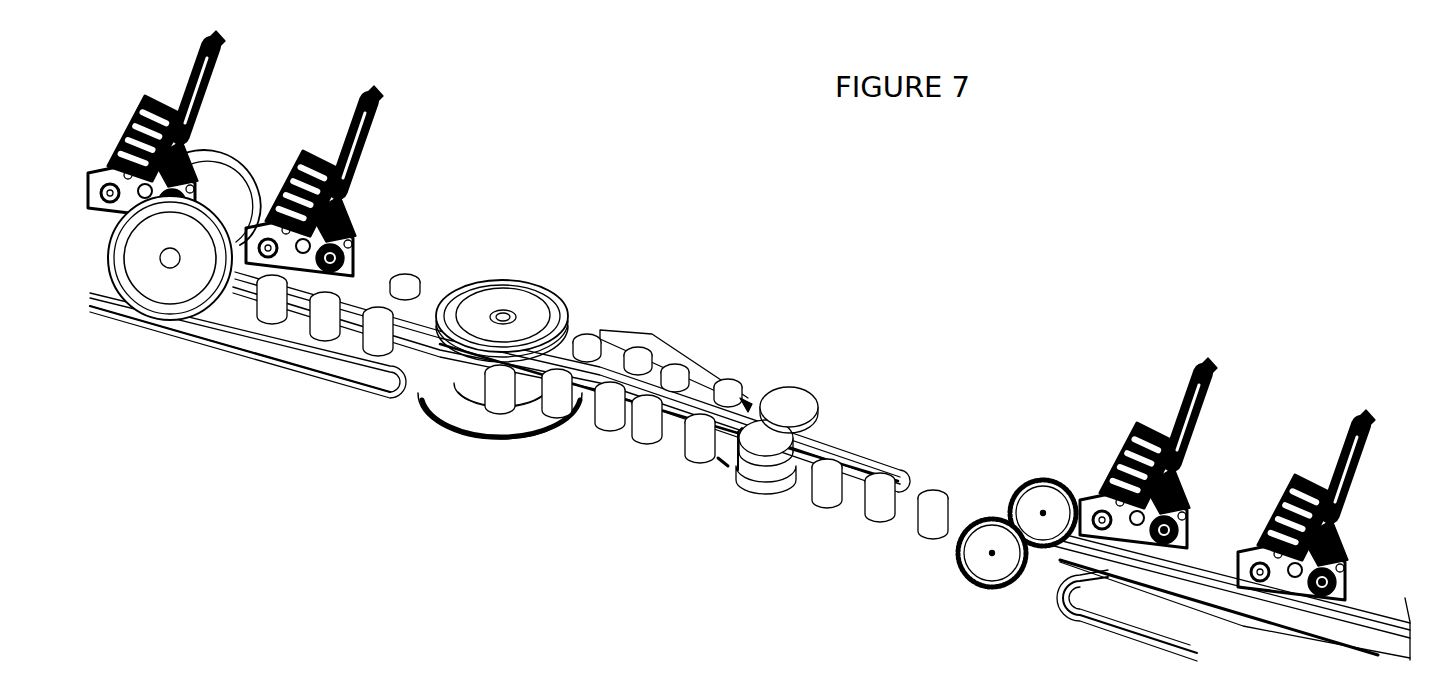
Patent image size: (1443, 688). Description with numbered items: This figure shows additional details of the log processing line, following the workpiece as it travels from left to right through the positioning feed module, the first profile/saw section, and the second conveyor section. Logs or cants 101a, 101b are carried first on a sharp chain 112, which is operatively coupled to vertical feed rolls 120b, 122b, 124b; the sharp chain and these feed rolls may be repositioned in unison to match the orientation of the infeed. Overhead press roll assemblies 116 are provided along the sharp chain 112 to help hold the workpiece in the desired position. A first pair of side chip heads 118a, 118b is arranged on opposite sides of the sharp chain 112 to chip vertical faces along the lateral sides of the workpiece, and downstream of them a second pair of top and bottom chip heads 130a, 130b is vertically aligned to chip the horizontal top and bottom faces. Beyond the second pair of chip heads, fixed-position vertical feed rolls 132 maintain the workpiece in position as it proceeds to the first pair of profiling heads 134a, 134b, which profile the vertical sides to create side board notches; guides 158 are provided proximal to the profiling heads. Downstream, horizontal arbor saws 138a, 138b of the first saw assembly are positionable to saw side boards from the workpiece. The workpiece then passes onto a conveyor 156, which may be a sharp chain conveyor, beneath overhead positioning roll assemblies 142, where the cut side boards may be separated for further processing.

The log/cant 101a is at (415, 318).
The log/cant 101b is at (1203, 563).
The sharp chain 112 is at (390, 399).
The overhead press roll assembly 116 is at (396, 166).
The chip head 118a is at (231, 182).
The chip head 118b is at (160, 338).
The vertical feed roll 120b is at (273, 308).
The vertical feed roll 122b is at (323, 330).
The vertical feed roll 124b is at (333, 393).
The chip head 130a is at (538, 295).
The chip head 130b is at (500, 440).
The vertical feed rolls 132 is at (638, 352).
The profiling head 134a is at (818, 393).
The profiling head 134b is at (735, 490).
The horizontal arbor saw 138a is at (1028, 478).
The horizontal arbor saw 138b is at (975, 566).
The overhead positioning roll assembly 142 is at (1133, 395).
The conveyor 156 is at (1058, 612).
The guides 158 is at (745, 405).